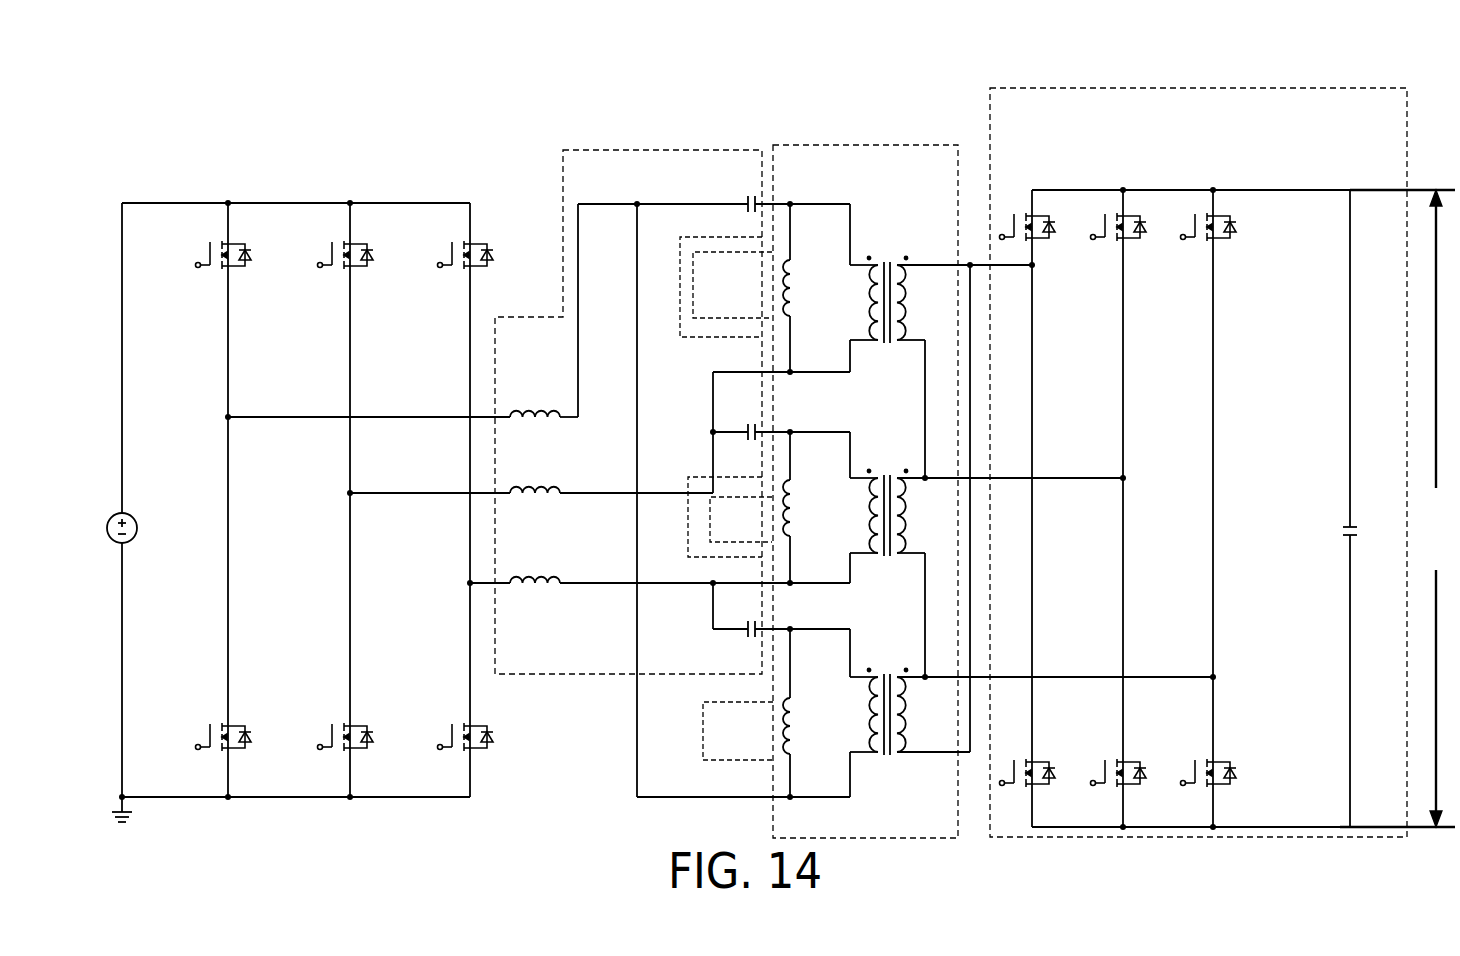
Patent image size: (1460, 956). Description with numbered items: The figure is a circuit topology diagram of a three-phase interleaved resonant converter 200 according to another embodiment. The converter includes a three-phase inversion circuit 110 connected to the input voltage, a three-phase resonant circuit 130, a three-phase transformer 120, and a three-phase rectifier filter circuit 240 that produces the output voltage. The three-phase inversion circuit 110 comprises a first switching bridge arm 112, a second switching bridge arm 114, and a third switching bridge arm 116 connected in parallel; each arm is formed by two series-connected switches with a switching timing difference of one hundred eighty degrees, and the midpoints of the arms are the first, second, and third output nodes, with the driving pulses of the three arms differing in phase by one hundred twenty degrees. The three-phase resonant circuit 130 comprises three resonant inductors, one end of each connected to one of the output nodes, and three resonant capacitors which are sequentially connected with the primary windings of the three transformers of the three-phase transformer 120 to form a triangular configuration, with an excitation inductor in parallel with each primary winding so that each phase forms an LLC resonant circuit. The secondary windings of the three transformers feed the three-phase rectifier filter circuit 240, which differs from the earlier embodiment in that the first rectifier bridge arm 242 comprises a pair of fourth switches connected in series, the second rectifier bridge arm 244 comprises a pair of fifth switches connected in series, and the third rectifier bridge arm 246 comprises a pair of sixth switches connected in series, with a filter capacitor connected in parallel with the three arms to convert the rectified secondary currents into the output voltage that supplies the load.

The three-phase interleaved resonant converter 200 is at (120, 36).
The three-phase inversion circuit 110 is at (438, 97).
The first switching bridge arm 112 is at (222, 176).
The second switching bridge arm 114 is at (340, 176).
The third switching bridge arm 116 is at (458, 176).
The three-phase resonant circuit 130 is at (652, 149).
The three-phase transformer 120 is at (890, 145).
The three-phase rectifier filter circuit 240 is at (1176, 88).
The first rectifier bridge arm 242 is at (1038, 172).
The second rectifier bridge arm 244 is at (1130, 172).
The third rectifier bridge arm 246 is at (1220, 172).